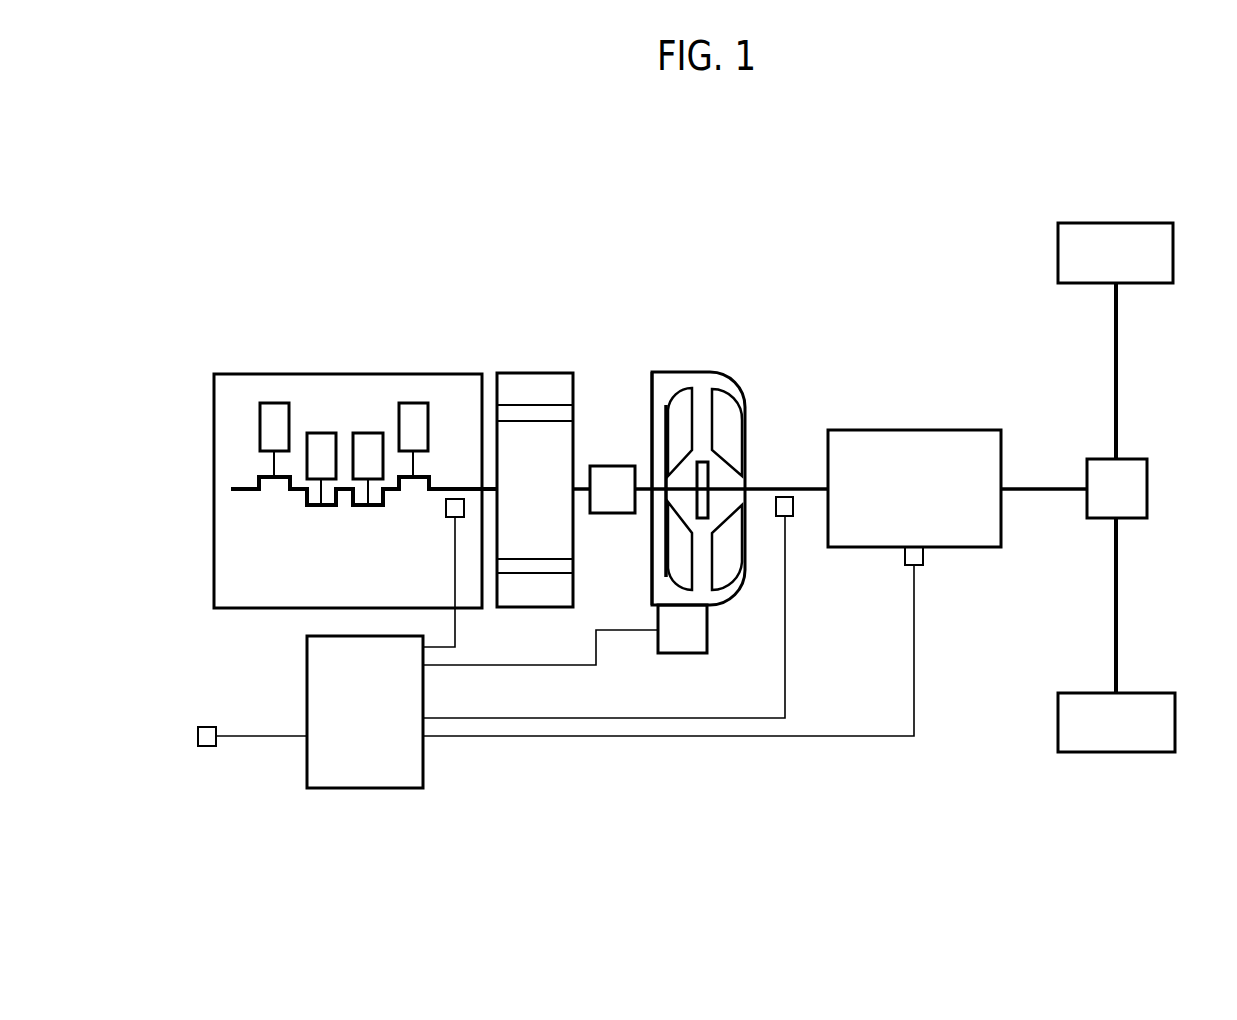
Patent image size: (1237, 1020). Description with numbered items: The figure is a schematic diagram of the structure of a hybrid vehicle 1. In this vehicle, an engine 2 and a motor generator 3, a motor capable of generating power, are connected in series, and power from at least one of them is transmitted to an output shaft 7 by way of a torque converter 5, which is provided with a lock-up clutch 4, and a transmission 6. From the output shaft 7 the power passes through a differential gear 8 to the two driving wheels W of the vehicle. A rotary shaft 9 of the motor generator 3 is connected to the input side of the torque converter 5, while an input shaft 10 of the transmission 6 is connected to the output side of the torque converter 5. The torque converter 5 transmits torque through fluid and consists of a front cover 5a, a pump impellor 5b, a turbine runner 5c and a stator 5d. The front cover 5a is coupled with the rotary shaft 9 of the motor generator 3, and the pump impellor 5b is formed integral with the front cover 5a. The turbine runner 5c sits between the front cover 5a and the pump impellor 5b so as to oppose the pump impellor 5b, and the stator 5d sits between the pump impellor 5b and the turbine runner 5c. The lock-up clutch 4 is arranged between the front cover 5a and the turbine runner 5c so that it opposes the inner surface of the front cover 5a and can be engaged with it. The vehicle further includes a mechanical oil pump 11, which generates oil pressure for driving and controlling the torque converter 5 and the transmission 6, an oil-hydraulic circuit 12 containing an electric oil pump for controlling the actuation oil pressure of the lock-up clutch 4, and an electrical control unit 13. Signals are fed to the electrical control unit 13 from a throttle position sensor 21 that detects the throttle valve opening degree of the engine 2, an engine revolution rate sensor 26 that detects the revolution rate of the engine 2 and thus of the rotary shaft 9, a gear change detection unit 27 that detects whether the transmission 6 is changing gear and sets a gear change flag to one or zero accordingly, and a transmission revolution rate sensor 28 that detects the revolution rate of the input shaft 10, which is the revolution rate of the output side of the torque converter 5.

The hybrid vehicle 1 is at (374, 312).
The engine 2 is at (243, 374).
The motor generator 3 is at (513, 373).
The lock-up clutch 4 is at (666, 405).
The torque converter 5 is at (688, 372).
The front cover 5a is at (652, 390).
The pump impellor 5b is at (736, 408).
The turbine runner 5c is at (696, 405).
The stator 5d is at (708, 475).
The transmission 6 is at (913, 430).
The output shaft 7 is at (1042, 491).
The differential gear 8 is at (1147, 487).
The rotary shaft 9 is at (583, 489).
The input shaft 10 is at (818, 489).
The mechanical oil pump 11 is at (617, 513).
The oil-hydraulic circuit 12 is at (707, 640).
The electrical control unit 13 is at (307, 668).
The throttle position sensor 21 is at (207, 746).
The engine revolution rate sensor 26 is at (446, 510).
The gear change detection unit 27 is at (923, 556).
The transmission revolution rate sensor 28 is at (793, 516).
The driving wheels W is at (1173, 252).